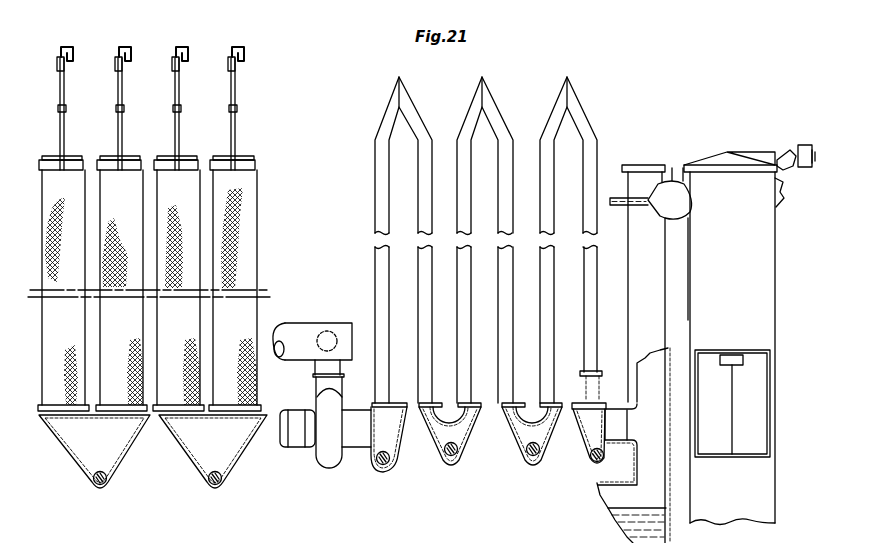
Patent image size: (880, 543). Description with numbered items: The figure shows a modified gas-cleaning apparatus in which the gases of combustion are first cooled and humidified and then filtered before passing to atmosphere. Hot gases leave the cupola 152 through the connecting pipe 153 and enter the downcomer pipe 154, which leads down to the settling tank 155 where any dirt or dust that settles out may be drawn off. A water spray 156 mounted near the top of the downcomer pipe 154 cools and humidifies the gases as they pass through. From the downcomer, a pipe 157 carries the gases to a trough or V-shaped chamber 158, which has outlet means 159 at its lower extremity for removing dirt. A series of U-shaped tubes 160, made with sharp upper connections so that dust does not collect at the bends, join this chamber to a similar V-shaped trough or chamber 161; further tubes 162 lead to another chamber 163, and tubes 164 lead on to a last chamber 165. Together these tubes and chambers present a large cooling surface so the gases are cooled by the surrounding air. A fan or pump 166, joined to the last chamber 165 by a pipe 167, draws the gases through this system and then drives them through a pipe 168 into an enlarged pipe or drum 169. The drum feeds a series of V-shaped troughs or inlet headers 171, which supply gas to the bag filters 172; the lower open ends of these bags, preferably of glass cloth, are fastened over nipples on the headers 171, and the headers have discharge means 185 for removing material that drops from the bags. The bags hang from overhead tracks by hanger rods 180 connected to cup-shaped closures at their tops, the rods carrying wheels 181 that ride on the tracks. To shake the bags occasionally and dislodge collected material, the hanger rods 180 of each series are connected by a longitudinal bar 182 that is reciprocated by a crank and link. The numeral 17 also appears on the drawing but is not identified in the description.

The hook support 17 is at (244, 48).
The wheels 181 is at (233, 52).
The longitudinal bar 182 is at (238, 108).
The hanger rods 180 is at (64, 133).
The bag filters 172 is at (250, 256).
The V-shaped troughs or chambers (gas inlet headers) 171 is at (80, 475).
The outlet openings or discharge means 185 is at (215, 484).
The enlarged pipe or drum 169 is at (291, 333).
The pipe 168 is at (339, 365).
The fan or pump 166 is at (328, 460).
The pipe 167 is at (362, 447).
The chamber 165 is at (405, 450).
The tubes 164 is at (422, 310).
The chamber 163 is at (444, 434).
The tubes 162 is at (469, 280).
The V-shaped connecting trough or chamber 161 is at (524, 430).
The U-shaped tubes 160 is at (590, 130).
The trough or V-shaped chamber 158 is at (593, 427).
The outlet means 159 is at (598, 468).
The pipe 157 is at (610, 447).
The settling tank 155 is at (608, 515).
The water spray 156 is at (614, 198).
The connecting pipe 153 is at (677, 168).
The downcomer pipe 154 is at (633, 272).
The cupola 152 is at (757, 245).